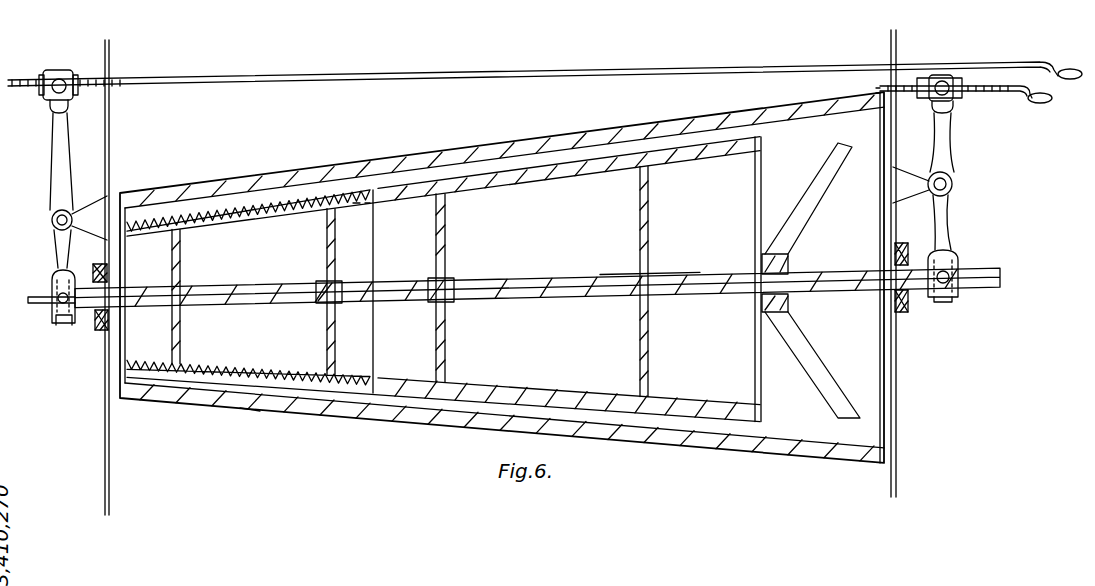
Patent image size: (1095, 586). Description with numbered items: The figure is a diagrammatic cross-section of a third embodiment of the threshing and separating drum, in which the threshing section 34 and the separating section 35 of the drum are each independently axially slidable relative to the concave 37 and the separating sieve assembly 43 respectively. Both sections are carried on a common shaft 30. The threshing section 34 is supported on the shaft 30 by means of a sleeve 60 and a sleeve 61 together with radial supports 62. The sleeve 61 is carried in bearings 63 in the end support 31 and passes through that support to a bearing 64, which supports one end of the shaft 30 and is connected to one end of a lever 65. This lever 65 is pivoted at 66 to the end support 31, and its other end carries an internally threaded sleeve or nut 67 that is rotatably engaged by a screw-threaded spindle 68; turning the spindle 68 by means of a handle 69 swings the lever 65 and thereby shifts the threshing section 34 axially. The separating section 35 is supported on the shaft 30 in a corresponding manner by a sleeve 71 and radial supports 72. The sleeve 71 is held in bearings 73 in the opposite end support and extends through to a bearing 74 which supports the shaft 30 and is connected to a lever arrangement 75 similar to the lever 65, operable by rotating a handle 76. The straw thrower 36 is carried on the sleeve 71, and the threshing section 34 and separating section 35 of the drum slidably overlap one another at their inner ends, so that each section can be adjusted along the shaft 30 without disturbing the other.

The shaft 30 is at (496, 296).
The end support 31 is at (104, 416).
The threshing section 34 is at (222, 372).
The separating section 35 is at (424, 380).
The straw thrower 36 is at (803, 352).
The concave 37 is at (252, 408).
The separating sieve assembly 43 is at (472, 428).
The sleeve 60 is at (342, 290).
The sleeve 61 is at (143, 284).
The radial supports 62 is at (172, 336).
The bearings 63 is at (97, 334).
The bearing 64 is at (62, 328).
The lever 65 is at (58, 152).
The pivot 66 is at (52, 226).
The internally threaded sleeve or nut 67 is at (61, 72).
The screw-threaded spindle 68 is at (322, 76).
The handle 69 is at (1071, 80).
The sleeve 71 is at (671, 275).
The radial supports 72 is at (448, 262).
The bearings 73 is at (906, 318).
The bearing 74 is at (945, 308).
The lever arrangement 75 is at (963, 194).
The handle 76 is at (1038, 104).